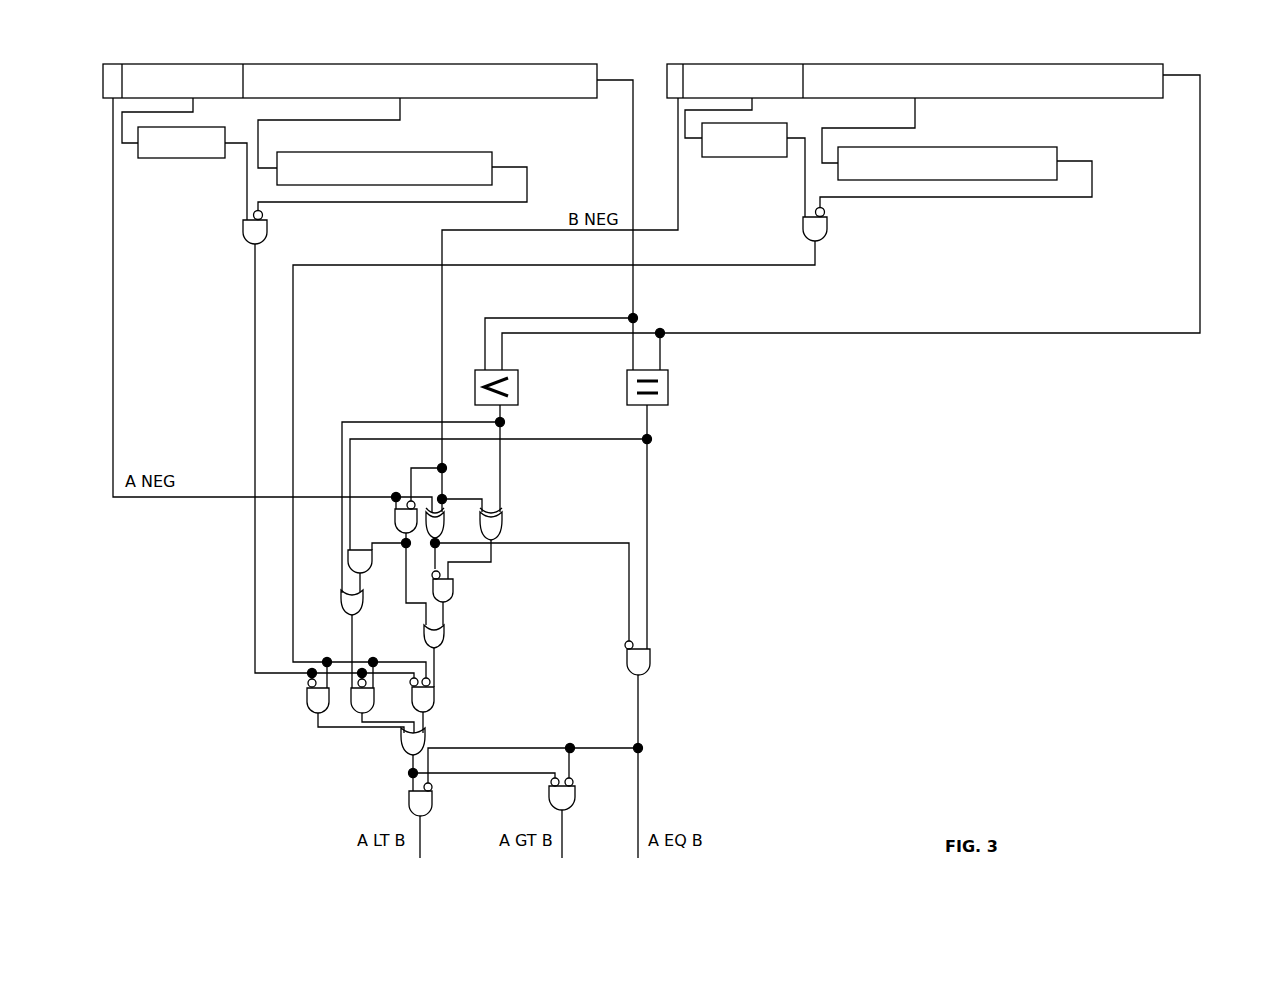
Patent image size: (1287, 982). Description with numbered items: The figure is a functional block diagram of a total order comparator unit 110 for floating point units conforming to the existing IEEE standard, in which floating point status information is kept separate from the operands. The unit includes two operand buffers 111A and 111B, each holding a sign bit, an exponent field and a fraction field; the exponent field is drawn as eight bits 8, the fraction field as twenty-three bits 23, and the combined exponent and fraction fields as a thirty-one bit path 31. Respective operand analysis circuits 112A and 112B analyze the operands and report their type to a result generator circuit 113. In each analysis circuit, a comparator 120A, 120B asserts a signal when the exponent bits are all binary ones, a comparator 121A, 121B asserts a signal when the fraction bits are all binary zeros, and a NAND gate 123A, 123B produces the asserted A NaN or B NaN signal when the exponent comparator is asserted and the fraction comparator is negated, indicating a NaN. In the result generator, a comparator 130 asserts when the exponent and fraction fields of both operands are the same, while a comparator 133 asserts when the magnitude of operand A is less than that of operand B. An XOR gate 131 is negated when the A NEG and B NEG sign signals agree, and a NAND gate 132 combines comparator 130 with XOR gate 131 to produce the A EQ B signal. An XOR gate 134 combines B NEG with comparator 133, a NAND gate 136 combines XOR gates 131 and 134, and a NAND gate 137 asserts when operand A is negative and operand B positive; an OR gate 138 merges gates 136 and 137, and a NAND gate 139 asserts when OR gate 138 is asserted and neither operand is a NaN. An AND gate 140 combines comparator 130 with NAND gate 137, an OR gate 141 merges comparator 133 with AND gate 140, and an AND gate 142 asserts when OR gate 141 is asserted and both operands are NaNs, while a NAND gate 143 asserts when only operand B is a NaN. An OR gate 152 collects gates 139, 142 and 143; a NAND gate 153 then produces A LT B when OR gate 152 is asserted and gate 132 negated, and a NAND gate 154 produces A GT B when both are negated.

The operand buffer 111A is at (350, 68).
The operand buffer 111B is at (915, 68).
The exponent field width (8 bits) 8 is at (757, 108).
The fraction field width (23 bits) 23 is at (917, 110).
The 31-bit magnitude bus 31 is at (666, 346).
The comparator 120A is at (180, 160).
The comparator 120B is at (745, 160).
The comparator 121A is at (338, 152).
The comparator 121B is at (922, 147).
The NAND gate 123A is at (267, 240).
The NAND gate 123B is at (827, 236).
The comparator 133 is at (518, 388).
The comparator 130 is at (668, 388).
The operand analysis circuit 112A is at (196, 340).
The operand analysis circuit 112B is at (979, 371).
The result generator circuit 113 is at (162, 546).
The total order comparator unit 110 is at (893, 543).
The NAND gate 137 is at (395, 520).
The XOR gate 131 is at (444, 526).
The XOR gate 134 is at (500, 528).
The AND gate 140 is at (348, 557).
The OR gate 141 is at (341, 597).
The NAND gate 136 is at (453, 592).
The OR gate 138 is at (444, 637).
The NAND gate 132 is at (650, 667).
The NAND gate 143 is at (307, 701).
The AND gate 142 is at (374, 697).
The NAND gate 139 is at (434, 700).
The OR gate 152 is at (402, 750).
The NAND gate 153 is at (432, 808).
The NAND gate 154 is at (575, 798).